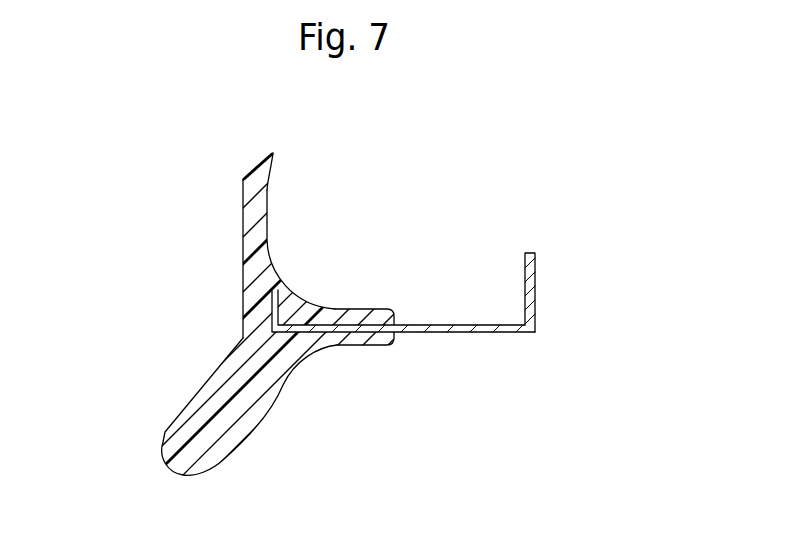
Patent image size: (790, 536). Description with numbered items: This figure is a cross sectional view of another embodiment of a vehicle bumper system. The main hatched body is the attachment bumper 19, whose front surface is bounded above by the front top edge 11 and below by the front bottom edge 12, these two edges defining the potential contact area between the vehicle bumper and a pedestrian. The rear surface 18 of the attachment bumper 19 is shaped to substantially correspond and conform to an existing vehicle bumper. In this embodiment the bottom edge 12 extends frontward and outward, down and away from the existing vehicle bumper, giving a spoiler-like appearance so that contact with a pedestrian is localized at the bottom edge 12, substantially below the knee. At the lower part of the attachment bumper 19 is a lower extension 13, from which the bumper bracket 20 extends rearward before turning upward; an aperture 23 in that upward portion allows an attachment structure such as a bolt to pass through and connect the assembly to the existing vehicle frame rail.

The front top edge 11 is at (267, 158).
The front bottom edge 12 is at (165, 462).
The lower extension 13 is at (348, 347).
The rear surface 18 is at (267, 220).
The attachment bumper 19 is at (253, 268).
The bumper bracket 20 is at (475, 334).
The aperture 23 is at (534, 283).